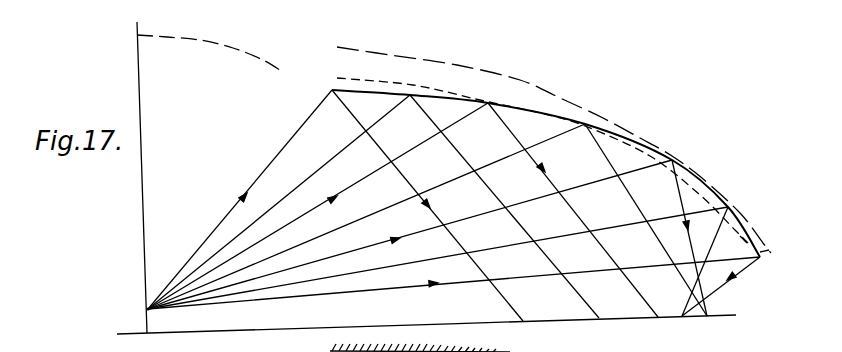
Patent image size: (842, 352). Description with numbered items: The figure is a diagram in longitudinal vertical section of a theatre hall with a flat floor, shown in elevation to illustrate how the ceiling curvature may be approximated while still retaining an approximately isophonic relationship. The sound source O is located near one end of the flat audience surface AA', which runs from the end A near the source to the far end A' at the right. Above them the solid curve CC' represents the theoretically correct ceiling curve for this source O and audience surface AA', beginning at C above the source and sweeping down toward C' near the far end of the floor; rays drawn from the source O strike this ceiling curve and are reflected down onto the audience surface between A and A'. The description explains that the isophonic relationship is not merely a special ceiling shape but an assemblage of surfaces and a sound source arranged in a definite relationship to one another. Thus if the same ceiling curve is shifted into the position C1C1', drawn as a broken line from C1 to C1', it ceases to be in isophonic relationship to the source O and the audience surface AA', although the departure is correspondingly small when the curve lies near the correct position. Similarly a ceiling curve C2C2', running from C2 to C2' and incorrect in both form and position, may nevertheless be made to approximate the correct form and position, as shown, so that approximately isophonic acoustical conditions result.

The source O is at (138, 177).
The audience surface end point A is at (313, 338).
The audience surface end point A' is at (601, 325).
The ceiling curve end point C is at (448, 146).
The shifted ceiling curve end point C1 is at (544, 146).
The incorrect ceiling curve end point C2 is at (526, 211).
The ceiling curve end point C' is at (683, 304).
The shifted ceiling curve end point C1' is at (738, 284).
The incorrect ceiling curve end point C2' is at (754, 230).